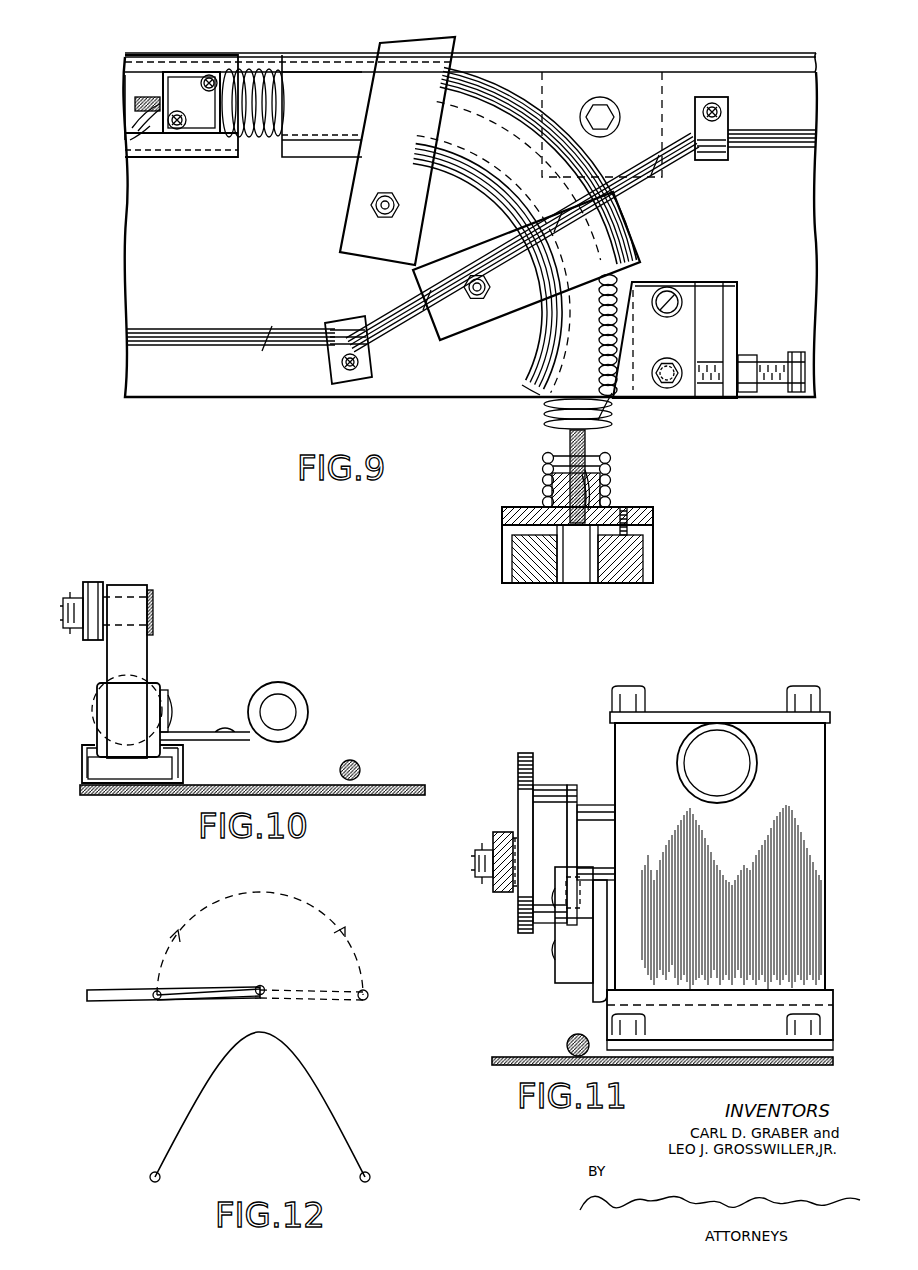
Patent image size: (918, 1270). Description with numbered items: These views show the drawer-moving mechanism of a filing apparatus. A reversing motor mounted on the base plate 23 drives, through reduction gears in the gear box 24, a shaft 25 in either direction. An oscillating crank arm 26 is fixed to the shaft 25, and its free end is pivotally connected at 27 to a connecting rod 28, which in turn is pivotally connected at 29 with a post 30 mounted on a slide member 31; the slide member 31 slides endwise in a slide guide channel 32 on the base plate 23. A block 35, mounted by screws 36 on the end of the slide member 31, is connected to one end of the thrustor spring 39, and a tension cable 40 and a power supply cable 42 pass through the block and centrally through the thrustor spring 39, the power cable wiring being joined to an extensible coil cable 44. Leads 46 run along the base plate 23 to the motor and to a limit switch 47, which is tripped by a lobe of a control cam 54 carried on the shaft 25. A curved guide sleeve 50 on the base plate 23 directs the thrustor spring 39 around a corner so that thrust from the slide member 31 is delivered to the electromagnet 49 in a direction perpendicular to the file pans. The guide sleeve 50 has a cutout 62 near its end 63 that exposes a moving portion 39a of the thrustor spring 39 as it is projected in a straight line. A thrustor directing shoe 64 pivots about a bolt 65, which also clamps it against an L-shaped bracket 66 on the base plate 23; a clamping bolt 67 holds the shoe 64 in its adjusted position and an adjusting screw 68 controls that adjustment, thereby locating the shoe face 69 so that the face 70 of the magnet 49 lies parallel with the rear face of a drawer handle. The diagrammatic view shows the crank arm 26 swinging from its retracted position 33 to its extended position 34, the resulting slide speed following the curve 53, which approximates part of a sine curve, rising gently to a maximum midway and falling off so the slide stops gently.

In FIG. 9, the base plate 23 is at (240, 380).
In FIG. 10, the base plate 23 is at (397, 785).
In FIG. 11, the base plate 23 is at (700, 1063).
In FIG. 11, the gear box 24 is at (775, 830).
In FIG. 11, the shaft 25 is at (585, 830).
In FIG. 12, the shaft 25 is at (262, 988).
In FIG. 11, the oscillating crank arm 26 is at (527, 752).
In FIG. 12, the oscillating crank arm 26 is at (225, 993).
In FIG. 11, the pivotal connection 27 is at (470, 853).
In FIG. 12, the pivotal connection 27 is at (140, 1000).
In FIG. 9, the connecting rod 28 is at (725, 66).
In FIG. 10, the connecting rod 28 is at (96, 588).
In FIG. 11, the connecting rod 28 is at (503, 832).
In FIG. 12, the connecting rod 28 is at (108, 990).
In FIG. 10, the pivotal connection 29 is at (68, 606).
In FIG. 10, the post 30 is at (135, 655).
In FIG. 9, the slide member 31 is at (128, 87).
In FIG. 10, the slide member 31 is at (105, 772).
In FIG. 9, the slide guide channel 32 is at (164, 146).
In FIG. 10, the slide guide channel 32 is at (184, 765).
In FIG. 12, the retracted position 33 is at (200, 990).
In FIG. 12, the extended position 34 is at (305, 988).
In FIG. 9, the block 35 is at (200, 120).
In FIG. 10, the block 35 is at (100, 712).
In FIG. 9, the screws 36 is at (180, 112).
In FIG. 9, the thrustor spring 39 is at (268, 115).
In FIG. 10, the thrustor spring 39 is at (165, 712).
In FIG. 9, the moving portion of thrustor spring 39a is at (616, 282).
In FIG. 9, the tension cable 40 is at (140, 100).
In FIG. 9, the power supply cable 42 is at (150, 128).
In FIG. 10, the extensible coil cable 44 is at (296, 700).
In FIG. 9, the leads 46 is at (172, 330).
In FIG. 10, the leads 46 is at (360, 762).
In FIG. 11, the leads 46 is at (566, 1040).
In FIG. 11, the limit switch 47 is at (567, 968).
In FIG. 9, the electromagnet 49 is at (655, 540).
In FIG. 9, the curved guide sleeve 50 is at (488, 125).
In FIG. 12, the curve 53 is at (335, 1103).
In FIG. 11, the control cam 54 is at (571, 785).
In FIG. 9, the cutout 62 is at (593, 327).
In FIG. 9, the end of guide sleeve 63 is at (535, 396).
In FIG. 9, the thrustor directing shoe 64 is at (680, 330).
In FIG. 9, the bolt 65 is at (670, 300).
In FIG. 9, the L-shaped bracket 66 is at (740, 335).
In FIG. 9, the clamping bolt 67 is at (668, 378).
In FIG. 9, the adjusting screw 68 is at (778, 378).
In FIG. 9, the shoe face 69 is at (613, 378).
In FIG. 9, the face of magnet 70 is at (548, 585).